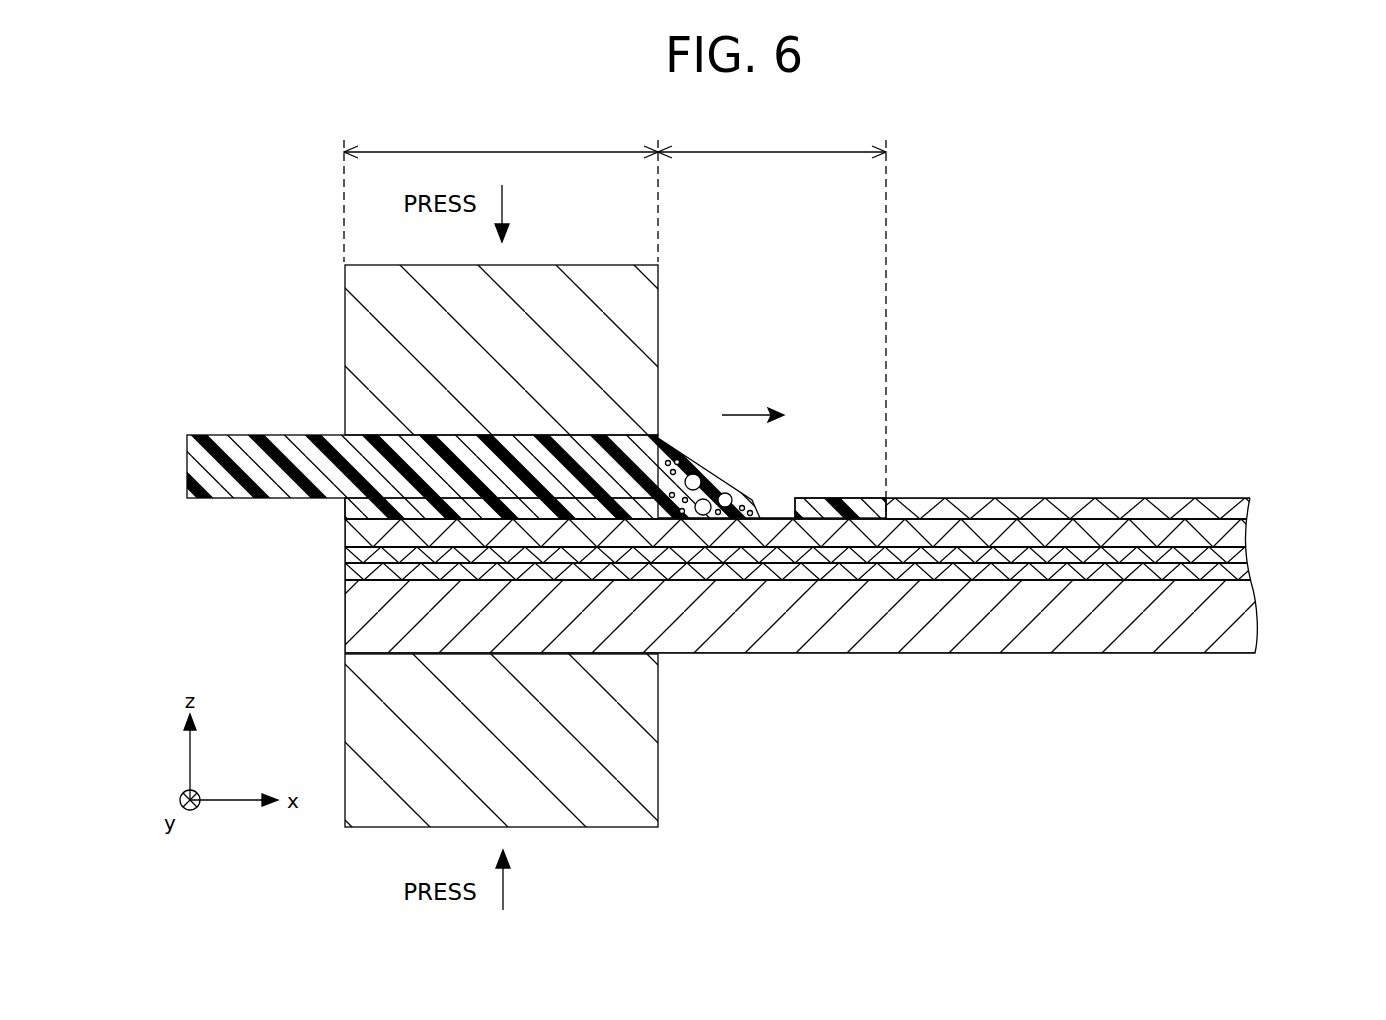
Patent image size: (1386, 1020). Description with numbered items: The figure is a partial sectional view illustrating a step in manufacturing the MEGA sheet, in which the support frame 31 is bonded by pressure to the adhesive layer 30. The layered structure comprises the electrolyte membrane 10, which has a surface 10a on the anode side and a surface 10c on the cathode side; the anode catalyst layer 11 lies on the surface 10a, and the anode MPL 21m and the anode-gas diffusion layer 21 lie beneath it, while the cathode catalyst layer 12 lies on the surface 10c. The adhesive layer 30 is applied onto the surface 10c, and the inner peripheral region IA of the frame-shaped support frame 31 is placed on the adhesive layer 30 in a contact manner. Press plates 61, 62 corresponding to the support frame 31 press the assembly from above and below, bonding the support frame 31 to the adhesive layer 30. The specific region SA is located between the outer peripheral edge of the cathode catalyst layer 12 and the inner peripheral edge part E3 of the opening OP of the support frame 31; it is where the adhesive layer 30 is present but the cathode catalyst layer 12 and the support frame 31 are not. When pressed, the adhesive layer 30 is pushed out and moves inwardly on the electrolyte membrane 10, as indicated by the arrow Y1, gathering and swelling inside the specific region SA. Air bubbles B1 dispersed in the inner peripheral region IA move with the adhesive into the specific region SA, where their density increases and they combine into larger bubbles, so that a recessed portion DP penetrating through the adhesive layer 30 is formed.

The press plate 62 is at (357, 352).
The press plate 61 is at (357, 743).
The support frame 31 is at (200, 470).
The adhesive layer 30 is at (344, 508).
The air bubbles B1 is at (663, 462).
The opening OP is at (690, 486).
The arrow Y1 is at (743, 414).
The recessed portion DP is at (787, 512).
The surface on the cathode side 10c is at (1200, 500).
The cathode catalyst layer 12 is at (1223, 508).
The electrolyte membrane 10 is at (1228, 532).
The anode catalyst layer 11 is at (1238, 555).
The anode MPL 21m is at (1200, 570).
The surface on the anode side 10a is at (1153, 548).
The anode-gas diffusion layer 21 is at (1183, 642).
The inner peripheral region IA is at (503, 136).
The inner peripheral edge part E3 is at (658, 129).
The specific region SA is at (770, 136).